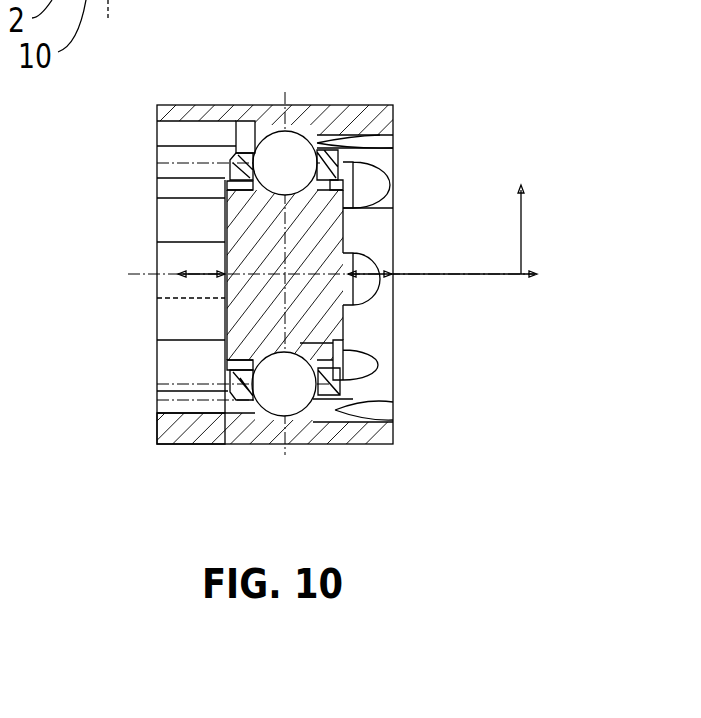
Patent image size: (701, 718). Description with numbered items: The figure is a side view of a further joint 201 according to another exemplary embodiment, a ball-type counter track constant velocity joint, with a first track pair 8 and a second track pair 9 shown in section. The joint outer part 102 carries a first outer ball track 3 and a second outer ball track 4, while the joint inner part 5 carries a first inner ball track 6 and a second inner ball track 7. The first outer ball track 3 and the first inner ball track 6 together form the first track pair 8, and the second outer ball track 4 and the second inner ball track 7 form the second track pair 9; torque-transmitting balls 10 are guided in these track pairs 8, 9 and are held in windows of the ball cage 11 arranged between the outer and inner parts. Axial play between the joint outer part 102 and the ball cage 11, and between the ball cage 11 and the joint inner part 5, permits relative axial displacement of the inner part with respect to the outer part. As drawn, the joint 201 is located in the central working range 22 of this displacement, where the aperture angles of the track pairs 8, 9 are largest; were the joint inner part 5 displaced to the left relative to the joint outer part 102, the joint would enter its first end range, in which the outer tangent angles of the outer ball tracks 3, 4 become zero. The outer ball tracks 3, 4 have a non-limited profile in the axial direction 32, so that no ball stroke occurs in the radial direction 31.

The first outer ball tracks 3 is at (187, 134).
The second outer ball tracks 4 is at (215, 405).
The joint inner part 5 is at (243, 325).
The first inner ball tracks 6 is at (250, 192).
The second inner ball tracks 7 is at (320, 358).
The first track pairs 8 is at (233, 133).
The second track pairs 9 is at (346, 416).
The torque-transmitting balls 10 is at (297, 150).
The ball cage 11 is at (247, 158).
The central working range 22 is at (210, 242).
The radial direction 31 is at (523, 215).
The axial direction 32 is at (503, 274).
The joint outer part 102 is at (175, 430).
The joint 201 is at (422, 139).